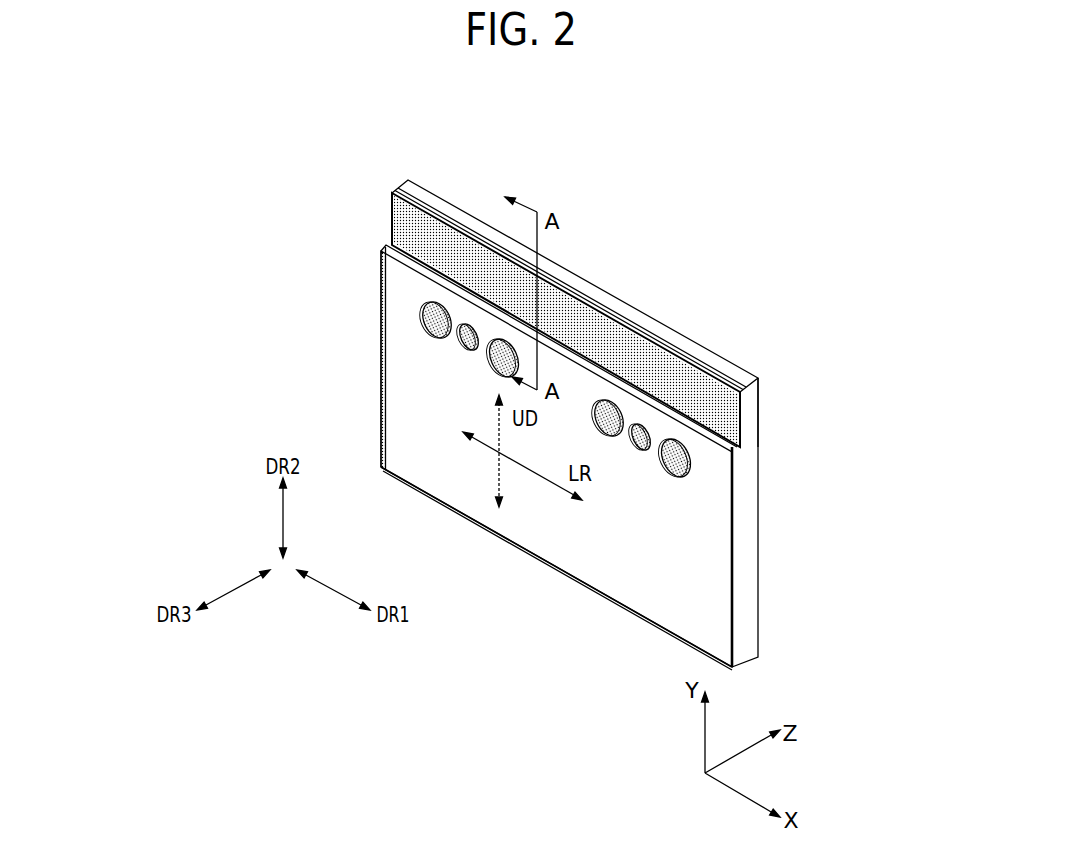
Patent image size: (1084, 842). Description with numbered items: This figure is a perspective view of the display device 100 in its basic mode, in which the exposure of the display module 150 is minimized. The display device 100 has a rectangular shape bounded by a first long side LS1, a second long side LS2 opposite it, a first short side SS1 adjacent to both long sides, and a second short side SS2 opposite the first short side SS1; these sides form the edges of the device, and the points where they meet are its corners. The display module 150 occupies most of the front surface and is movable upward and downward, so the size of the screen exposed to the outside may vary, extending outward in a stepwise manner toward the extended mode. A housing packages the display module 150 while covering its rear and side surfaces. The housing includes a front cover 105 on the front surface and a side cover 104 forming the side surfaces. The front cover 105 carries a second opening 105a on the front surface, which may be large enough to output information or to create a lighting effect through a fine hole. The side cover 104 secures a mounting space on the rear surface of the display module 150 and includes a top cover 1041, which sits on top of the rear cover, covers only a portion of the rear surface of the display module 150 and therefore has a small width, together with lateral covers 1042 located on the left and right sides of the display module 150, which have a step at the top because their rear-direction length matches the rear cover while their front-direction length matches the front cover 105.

The display device 100 is at (277, 173).
The side cover 104 is at (826, 338).
The top cover 1041 is at (703, 360).
The lateral covers 1042 is at (755, 418).
The front cover 105 is at (703, 572).
The second opening 105a is at (684, 460).
The display module 150 is at (592, 332).
The first long side LS1 is at (450, 212).
The second long side LS2 is at (443, 500).
The first short side SS1 is at (742, 527).
The second short side SS2 is at (380, 358).